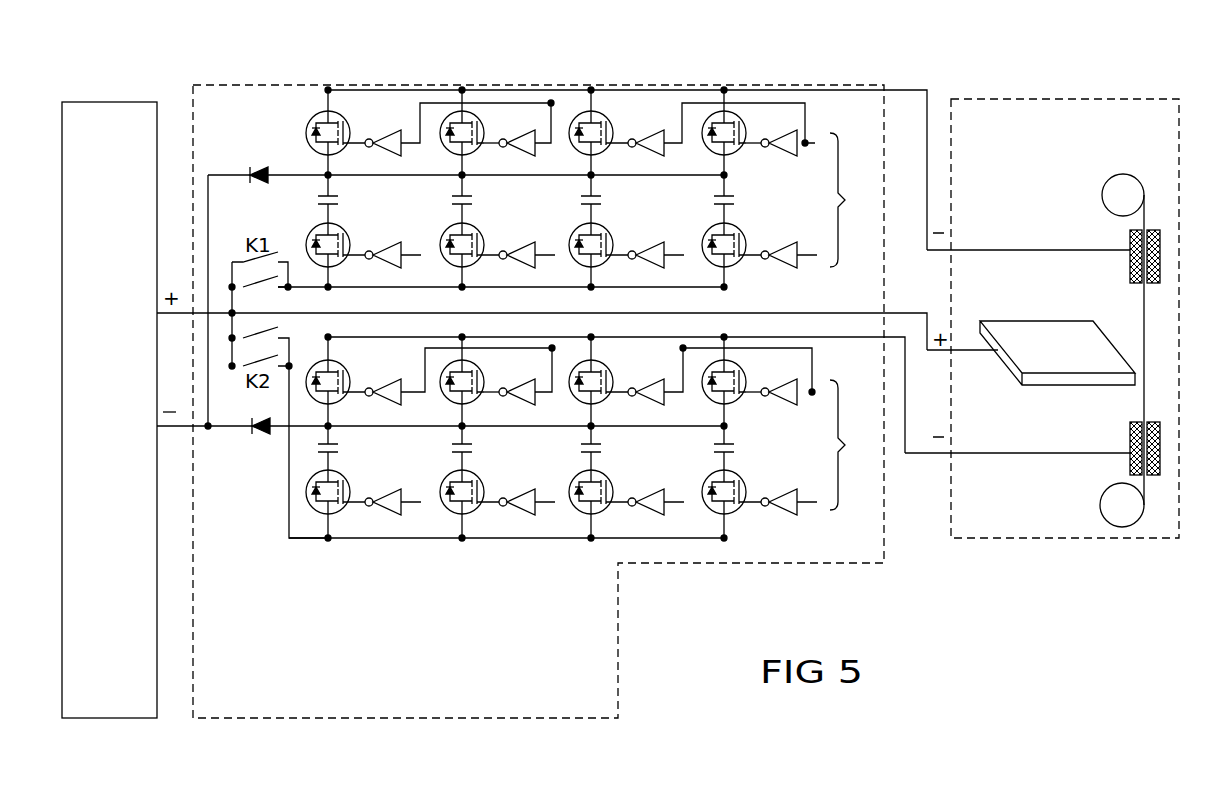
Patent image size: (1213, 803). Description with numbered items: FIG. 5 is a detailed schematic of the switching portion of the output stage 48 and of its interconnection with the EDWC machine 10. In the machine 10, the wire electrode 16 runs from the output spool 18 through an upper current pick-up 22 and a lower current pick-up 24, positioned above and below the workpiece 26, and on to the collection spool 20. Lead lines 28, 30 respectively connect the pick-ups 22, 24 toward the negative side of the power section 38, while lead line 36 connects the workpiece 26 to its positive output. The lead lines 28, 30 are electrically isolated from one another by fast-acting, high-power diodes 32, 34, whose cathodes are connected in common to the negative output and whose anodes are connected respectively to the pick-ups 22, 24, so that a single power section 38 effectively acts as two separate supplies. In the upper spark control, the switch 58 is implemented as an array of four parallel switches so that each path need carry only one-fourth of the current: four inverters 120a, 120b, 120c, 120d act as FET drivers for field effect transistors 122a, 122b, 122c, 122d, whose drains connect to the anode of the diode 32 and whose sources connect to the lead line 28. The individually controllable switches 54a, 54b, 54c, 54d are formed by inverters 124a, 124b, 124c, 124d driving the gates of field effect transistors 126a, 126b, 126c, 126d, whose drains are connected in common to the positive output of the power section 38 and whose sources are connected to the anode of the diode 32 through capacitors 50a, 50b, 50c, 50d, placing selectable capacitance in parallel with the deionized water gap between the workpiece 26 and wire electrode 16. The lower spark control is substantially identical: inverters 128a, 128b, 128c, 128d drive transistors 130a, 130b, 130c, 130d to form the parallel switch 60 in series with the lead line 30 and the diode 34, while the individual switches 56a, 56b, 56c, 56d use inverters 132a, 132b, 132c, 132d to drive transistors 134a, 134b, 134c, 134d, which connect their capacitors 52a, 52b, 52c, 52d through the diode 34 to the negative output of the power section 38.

The EDWC machine 10 is at (1043, 99).
The wire electrode 16 is at (1146, 325).
The output spool 18 is at (1139, 181).
The collection spool 20 is at (1122, 527).
The upper current pick-up 22 is at (1160, 243).
The lower current pick-up 24 is at (1160, 440).
The workpiece 26 is at (1040, 321).
The lead line 28 is at (1000, 250).
The lead line 30 is at (995, 453).
The diode 32 is at (259, 168).
The diode 34 is at (265, 434).
The lead line 36 is at (965, 352).
The power section 38 is at (147, 102).
The output stage 48 is at (693, 85).
The switch 58 is at (776, 78).
The switch 60 is at (743, 333).
The capacitor 50a is at (338, 200).
The capacitor 50b is at (472, 200).
The capacitor 50c is at (601, 200).
The capacitor 50d is at (734, 200).
The capacitor 52a is at (338, 447).
The capacitor 52b is at (472, 447).
The capacitor 52c is at (601, 447).
The capacitor 52d is at (749, 437).
The switch 54a is at (340, 272).
The switch 54b is at (476, 272).
The switch 54c is at (606, 272).
The switch 54d is at (736, 272).
The switch 56a is at (344, 524).
The switch 56b is at (470, 524).
The switch 56c is at (586, 524).
The switch 56d is at (745, 524).
The inverter 120a is at (383, 158).
The inverter 120b is at (517, 158).
The inverter 120c is at (646, 158).
The inverter 120d is at (778, 158).
The field effect transistor 122a is at (345, 119).
The field effect transistor 122b is at (479, 119).
The field effect transistor 122c is at (608, 119).
The field effect transistor 122d is at (741, 119).
The inverter 124a is at (390, 240).
The inverter 124b is at (526, 240).
The inverter 124c is at (656, 240).
The inverter 124d is at (785, 249).
The field effect transistor 126a is at (313, 228).
The field effect transistor 126b is at (477, 229).
The field effect transistor 126c is at (606, 229).
The field effect transistor 126d is at (739, 229).
The inverter 128a is at (398, 404).
The inverter 128b is at (532, 404).
The inverter 128c is at (662, 404).
The inverter 128d is at (800, 413).
The transistor 130a is at (344, 377).
The transistor 130b is at (478, 377).
The transistor 130c is at (607, 377).
The transistor 130d is at (741, 378).
The inverter 132a is at (388, 496).
The inverter 132b is at (523, 489).
The inverter 132c is at (652, 489).
The inverter 132d is at (800, 490).
The transistor 134a is at (344, 477).
The transistor 134b is at (476, 477).
The transistor 134c is at (606, 477).
The transistor 134d is at (741, 478).